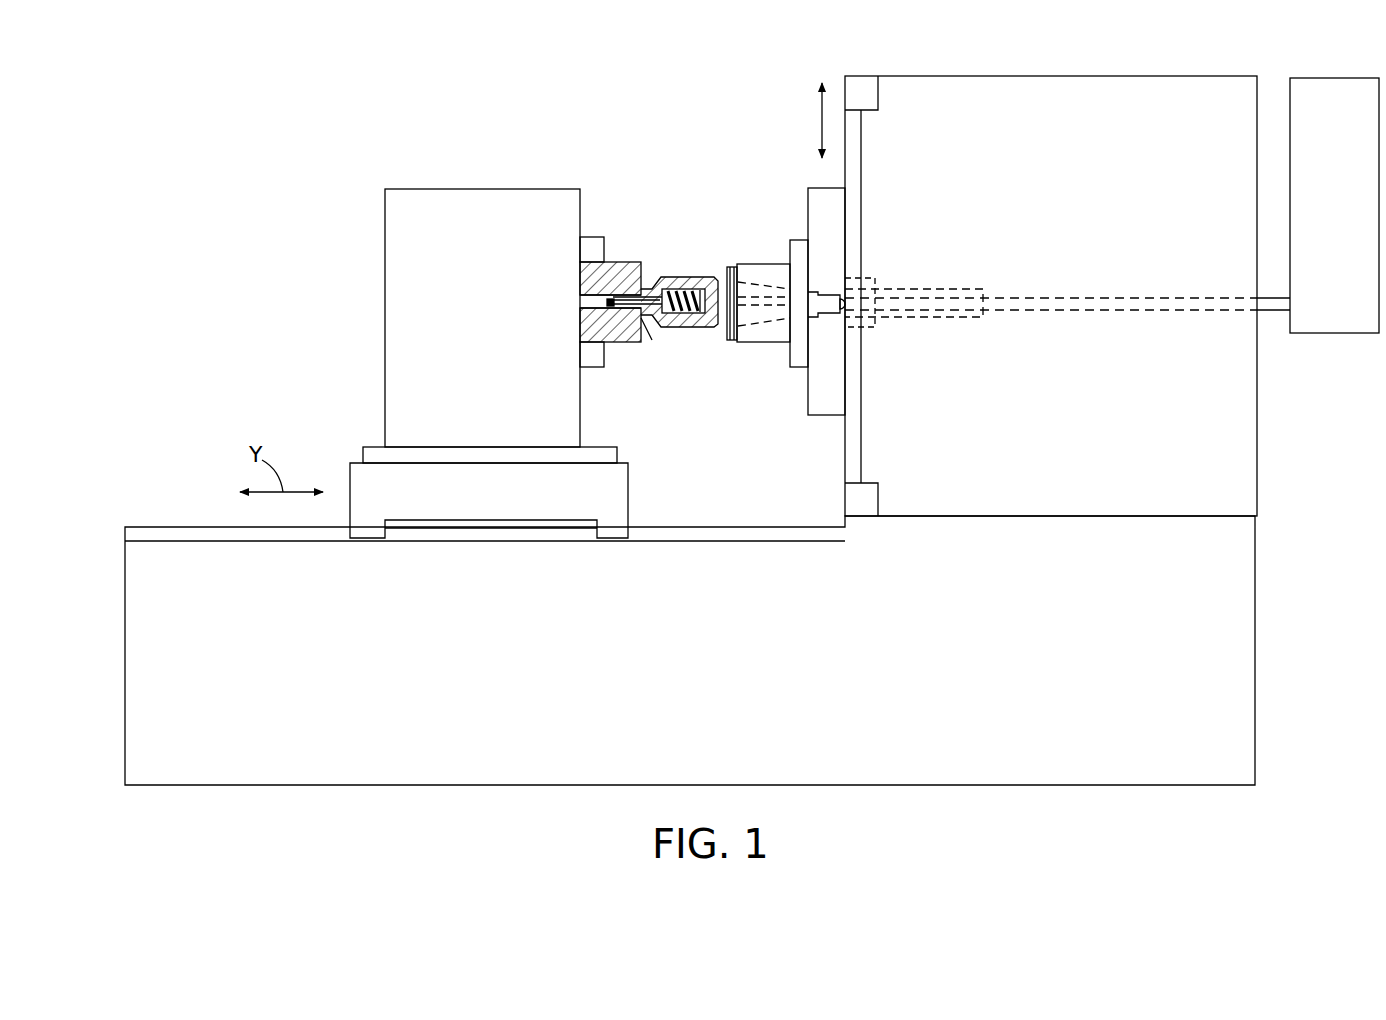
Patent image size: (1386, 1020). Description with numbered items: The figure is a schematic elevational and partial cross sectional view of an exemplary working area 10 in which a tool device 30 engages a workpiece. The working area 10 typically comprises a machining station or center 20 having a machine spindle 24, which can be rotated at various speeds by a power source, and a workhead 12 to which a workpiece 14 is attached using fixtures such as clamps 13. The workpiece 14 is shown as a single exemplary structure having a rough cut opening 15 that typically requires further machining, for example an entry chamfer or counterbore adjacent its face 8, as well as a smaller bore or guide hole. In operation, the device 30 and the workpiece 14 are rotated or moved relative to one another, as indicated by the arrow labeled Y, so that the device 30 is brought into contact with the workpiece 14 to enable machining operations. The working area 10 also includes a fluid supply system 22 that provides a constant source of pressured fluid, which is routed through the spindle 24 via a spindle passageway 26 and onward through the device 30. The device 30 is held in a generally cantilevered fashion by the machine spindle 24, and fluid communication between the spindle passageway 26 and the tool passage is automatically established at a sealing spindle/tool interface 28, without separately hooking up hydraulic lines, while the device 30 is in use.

The face 8 is at (643, 280).
The working area 10 is at (700, 185).
The workhead 12 is at (547, 180).
The clamps 13 is at (594, 246).
The workpiece 14 is at (621, 262).
The rough cut opening 15 is at (651, 343).
The machining station or center 20 is at (1150, 78).
The fluid supply system 22 is at (1333, 333).
The machine spindle 24 is at (900, 290).
The spindle passageway 26 is at (1097, 298).
The spindle/tool interface 28 is at (836, 310).
The tool device 30 is at (710, 270).